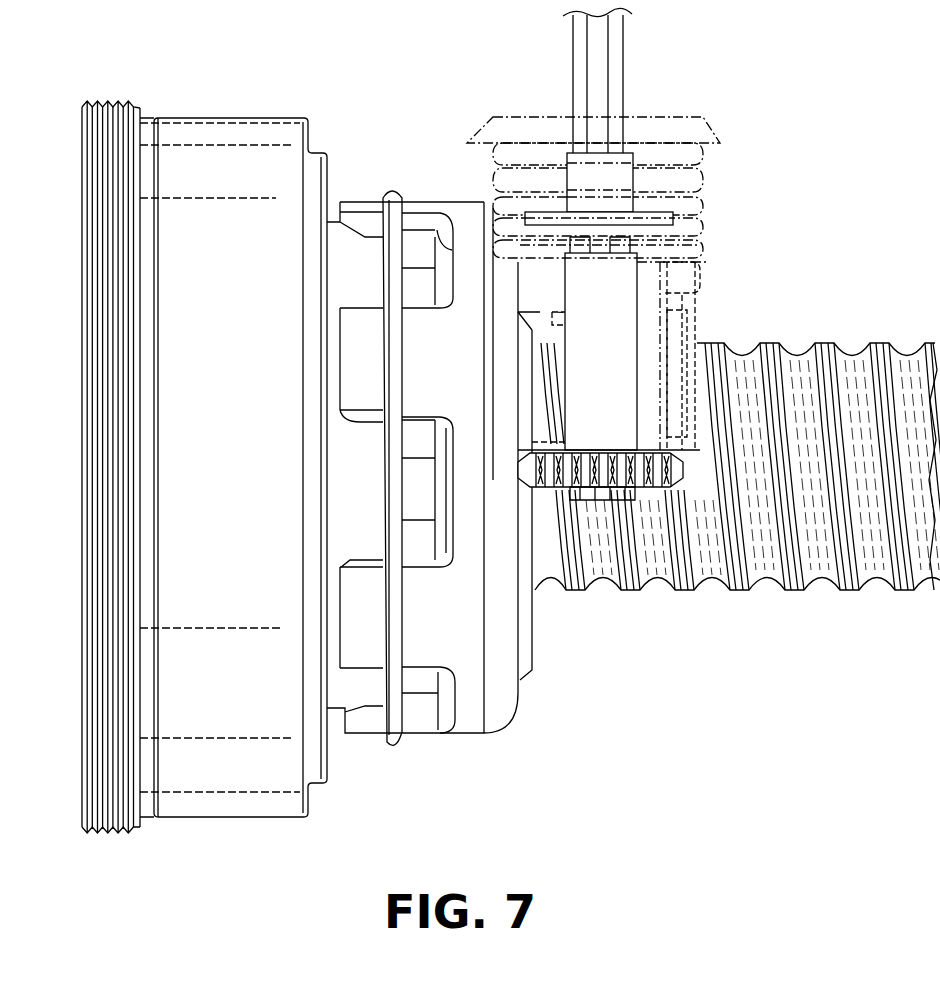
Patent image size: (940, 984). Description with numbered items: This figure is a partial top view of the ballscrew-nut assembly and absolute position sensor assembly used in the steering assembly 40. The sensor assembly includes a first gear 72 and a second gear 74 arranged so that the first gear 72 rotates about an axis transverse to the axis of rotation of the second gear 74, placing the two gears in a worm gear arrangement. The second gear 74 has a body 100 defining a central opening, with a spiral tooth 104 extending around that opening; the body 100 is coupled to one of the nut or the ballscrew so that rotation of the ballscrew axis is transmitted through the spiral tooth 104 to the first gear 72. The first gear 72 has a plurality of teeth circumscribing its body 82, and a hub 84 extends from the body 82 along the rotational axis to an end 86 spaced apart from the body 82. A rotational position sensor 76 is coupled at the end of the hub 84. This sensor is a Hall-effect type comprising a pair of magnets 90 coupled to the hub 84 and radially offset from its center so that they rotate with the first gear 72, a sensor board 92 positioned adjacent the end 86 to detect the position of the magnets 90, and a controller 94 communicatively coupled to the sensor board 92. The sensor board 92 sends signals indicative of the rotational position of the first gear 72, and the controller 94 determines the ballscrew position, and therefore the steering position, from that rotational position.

The steering assembly 40 is at (233, 68).
The first gear 72 is at (640, 492).
The second gear 74 is at (485, 734).
The rotational position sensor 76 is at (565, 205).
The body 82 is at (570, 592).
The hub 84 is at (620, 330).
The end 86 is at (598, 248).
The pair of magnets 90 is at (578, 244).
The sensor board 92 is at (646, 212).
The controller 94 is at (620, 182).
The body 100 is at (518, 708).
The spiral tooth 104 is at (530, 642).